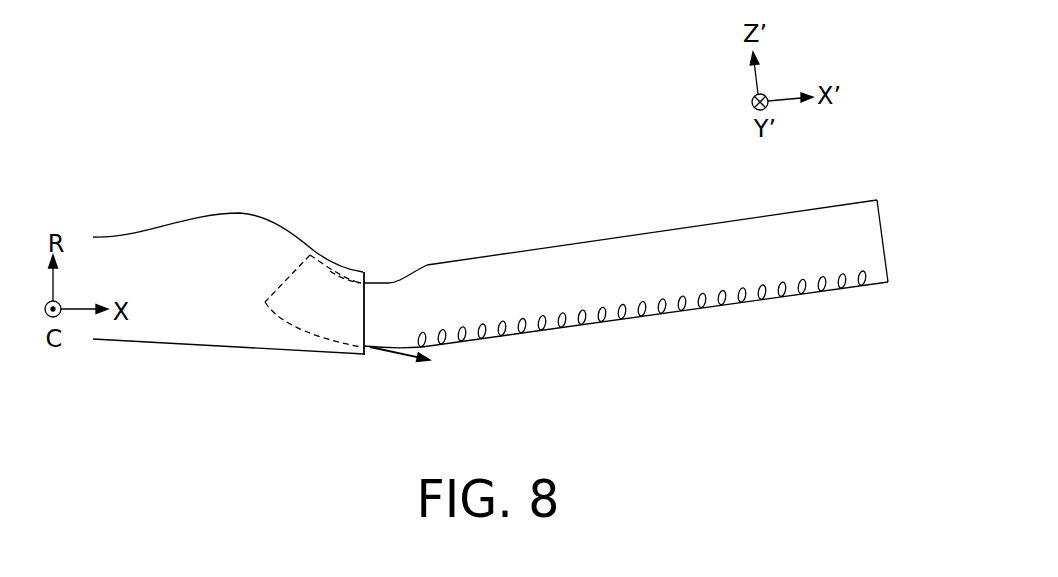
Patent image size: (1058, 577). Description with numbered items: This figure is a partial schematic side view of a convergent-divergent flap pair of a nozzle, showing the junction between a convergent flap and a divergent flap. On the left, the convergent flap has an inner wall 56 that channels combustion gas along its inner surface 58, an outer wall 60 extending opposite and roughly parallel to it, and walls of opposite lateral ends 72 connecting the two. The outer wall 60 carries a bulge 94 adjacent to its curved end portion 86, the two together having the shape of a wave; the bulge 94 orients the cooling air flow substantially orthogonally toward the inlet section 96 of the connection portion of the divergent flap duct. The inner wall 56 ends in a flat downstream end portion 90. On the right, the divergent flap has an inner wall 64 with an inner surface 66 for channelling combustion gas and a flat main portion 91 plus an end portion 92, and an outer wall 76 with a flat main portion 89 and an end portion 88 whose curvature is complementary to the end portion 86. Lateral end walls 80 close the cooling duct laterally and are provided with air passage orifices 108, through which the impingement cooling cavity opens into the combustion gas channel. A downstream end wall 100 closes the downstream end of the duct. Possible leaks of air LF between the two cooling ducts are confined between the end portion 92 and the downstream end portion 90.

The inner wall 56 is at (227, 364).
The inner surface for channelling combustion gas 58 is at (227, 364).
The outer wall 60 is at (228, 194).
The inner wall 64 is at (655, 319).
The inner surface for channelling combustion gas 66 is at (655, 319).
The walls of opposite lateral ends 72 is at (115, 342).
The outer wall 76 is at (652, 210).
The lateral end walls 80 is at (657, 265).
The end portion 86 is at (343, 277).
The end portion 88 is at (347, 267).
The main portion 89 is at (597, 238).
The downstream end portion 90 is at (328, 353).
The main portion 91 is at (820, 290).
The end portion 92 is at (293, 325).
The bulge 94 is at (110, 235).
The inlet section 96 is at (288, 277).
The downstream end wall 100 is at (885, 222).
The air passage orifices 108 is at (570, 323).
The leaks of air LF is at (400, 362).